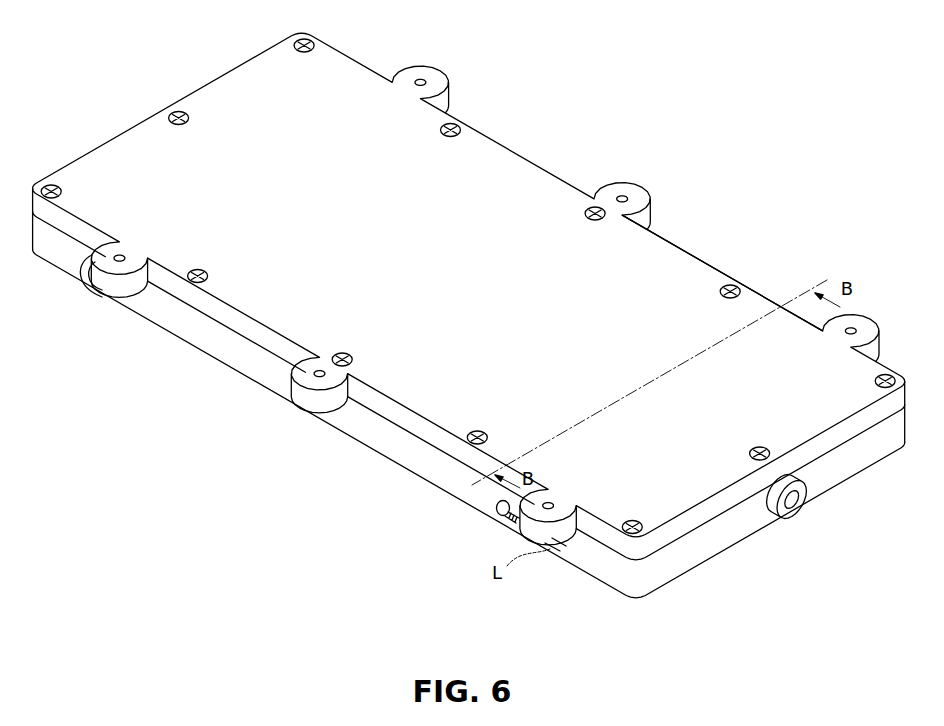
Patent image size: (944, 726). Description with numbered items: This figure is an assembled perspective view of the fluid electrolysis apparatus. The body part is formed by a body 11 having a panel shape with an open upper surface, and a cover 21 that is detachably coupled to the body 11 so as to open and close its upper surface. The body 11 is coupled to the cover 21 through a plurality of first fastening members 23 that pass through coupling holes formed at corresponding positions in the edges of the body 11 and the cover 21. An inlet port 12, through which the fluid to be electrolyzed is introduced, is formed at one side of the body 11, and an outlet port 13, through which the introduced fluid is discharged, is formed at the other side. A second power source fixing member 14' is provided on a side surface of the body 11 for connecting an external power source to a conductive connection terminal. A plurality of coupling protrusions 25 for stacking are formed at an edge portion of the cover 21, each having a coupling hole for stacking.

The body 11 is at (233, 357).
The inlet port 12 is at (84, 287).
The outlet port 13 is at (797, 503).
The second power source fixing member 14' is at (471, 520).
The cover 21 is at (506, 165).
The first fastening member 23 is at (733, 277).
The coupling protrusion for stacking 25 is at (325, 398).